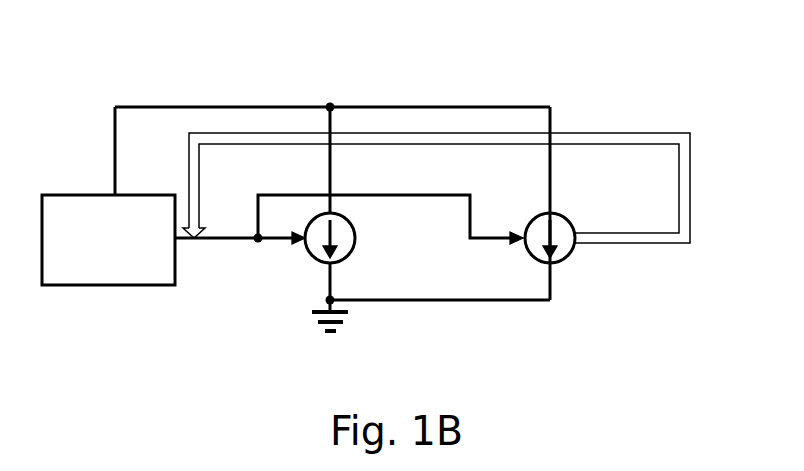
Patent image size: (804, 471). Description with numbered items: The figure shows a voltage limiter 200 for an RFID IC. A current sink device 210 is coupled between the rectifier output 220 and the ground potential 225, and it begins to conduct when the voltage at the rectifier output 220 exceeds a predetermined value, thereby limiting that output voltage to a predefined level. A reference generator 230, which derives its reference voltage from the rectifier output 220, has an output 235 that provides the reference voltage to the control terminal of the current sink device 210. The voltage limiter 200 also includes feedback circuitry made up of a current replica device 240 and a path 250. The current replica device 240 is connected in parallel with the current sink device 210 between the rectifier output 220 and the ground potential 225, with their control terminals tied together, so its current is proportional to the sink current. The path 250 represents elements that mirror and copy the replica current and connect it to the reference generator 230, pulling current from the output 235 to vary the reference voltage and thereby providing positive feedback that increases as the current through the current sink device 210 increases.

The voltage limiter 200 is at (585, 67).
The current sink device 210 is at (358, 238).
The output (Vrec) of the RF rectifier 220 is at (329, 106).
The ground potential (gnd) 225 is at (315, 322).
The reference generator 230 is at (70, 195).
The output of the reference generator 235 is at (256, 234).
The current replica device 240 is at (568, 217).
The path 250 is at (590, 133).